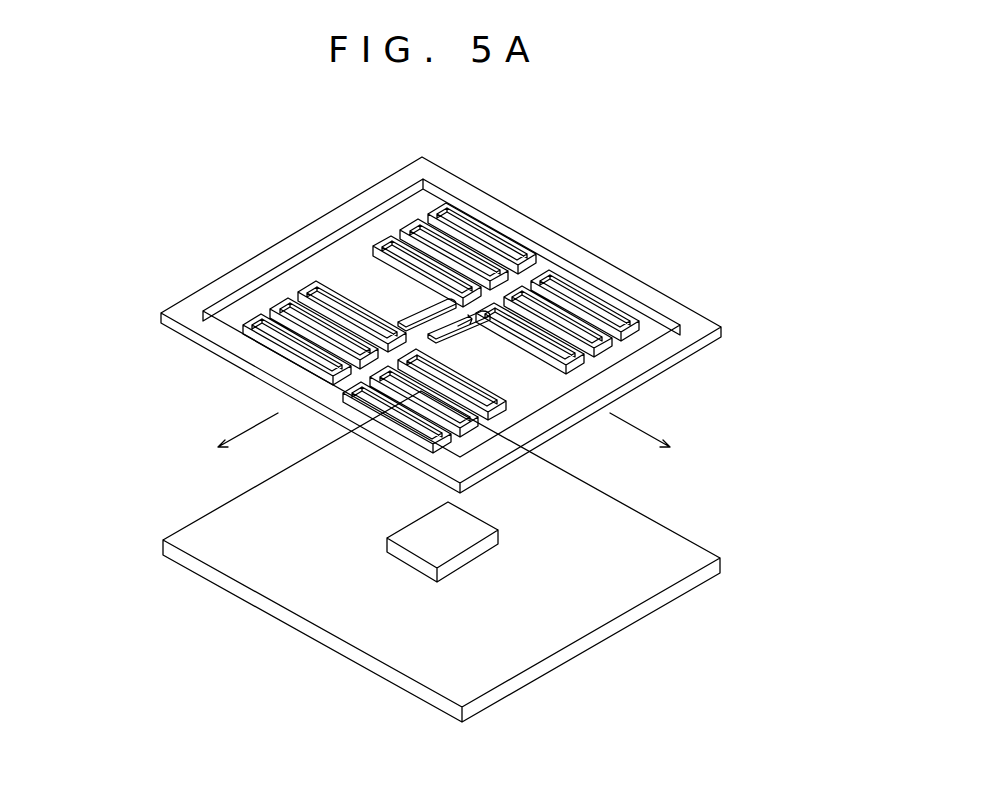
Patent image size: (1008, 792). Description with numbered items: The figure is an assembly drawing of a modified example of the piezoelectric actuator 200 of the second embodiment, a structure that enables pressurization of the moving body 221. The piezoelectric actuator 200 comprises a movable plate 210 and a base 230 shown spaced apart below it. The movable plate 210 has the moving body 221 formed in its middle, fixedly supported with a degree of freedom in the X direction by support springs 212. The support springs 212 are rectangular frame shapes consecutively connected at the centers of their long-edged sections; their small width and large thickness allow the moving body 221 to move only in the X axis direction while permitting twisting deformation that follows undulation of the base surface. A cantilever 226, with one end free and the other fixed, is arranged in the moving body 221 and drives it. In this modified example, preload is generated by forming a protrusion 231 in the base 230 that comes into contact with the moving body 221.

The piezoelectric actuator 200 is at (126, 232).
The movable plate 210 is at (723, 328).
The support spring 212 is at (438, 215).
The moving body 221 is at (397, 322).
The cantilever 226 is at (470, 321).
The base 230 is at (724, 560).
The protrusion 231 is at (458, 542).